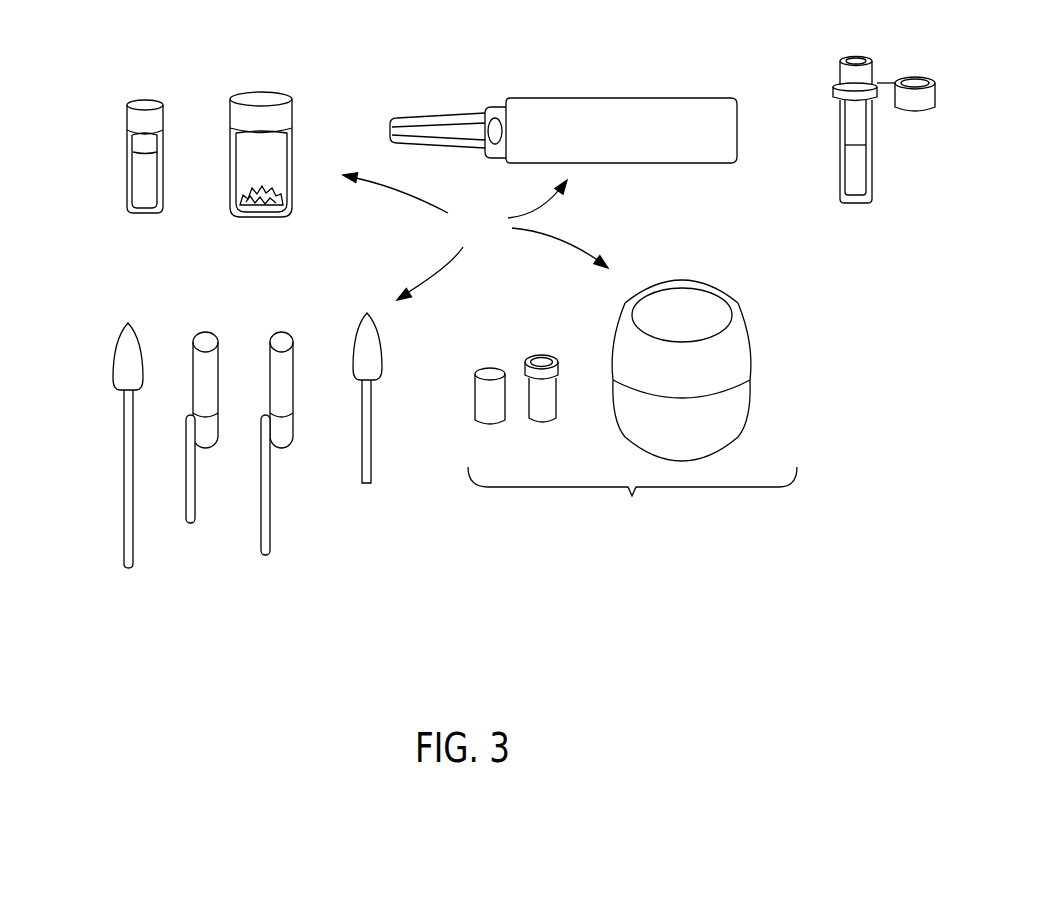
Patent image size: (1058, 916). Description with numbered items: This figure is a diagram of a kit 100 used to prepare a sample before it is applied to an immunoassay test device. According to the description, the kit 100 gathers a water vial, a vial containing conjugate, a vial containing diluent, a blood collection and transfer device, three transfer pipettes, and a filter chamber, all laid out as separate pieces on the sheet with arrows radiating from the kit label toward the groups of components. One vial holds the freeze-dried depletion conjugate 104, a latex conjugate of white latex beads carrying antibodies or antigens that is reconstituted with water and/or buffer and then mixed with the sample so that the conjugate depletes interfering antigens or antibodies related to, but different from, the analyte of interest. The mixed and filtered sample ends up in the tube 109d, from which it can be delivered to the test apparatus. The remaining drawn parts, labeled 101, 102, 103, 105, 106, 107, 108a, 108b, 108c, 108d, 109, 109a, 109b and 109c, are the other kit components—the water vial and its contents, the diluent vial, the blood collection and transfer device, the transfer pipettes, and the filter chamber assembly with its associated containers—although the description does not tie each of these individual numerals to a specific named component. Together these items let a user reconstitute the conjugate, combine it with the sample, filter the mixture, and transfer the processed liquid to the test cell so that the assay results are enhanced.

The kit 100 is at (475, 236).
The vial 101 is at (127, 143).
The liquid in vial 102 is at (147, 177).
The vial 103 is at (293, 146).
The freeze-dried depletion conjugate 104 is at (277, 207).
The tube 105 is at (850, 170).
The cap 106 is at (864, 153).
The tube applicator 107 is at (633, 100).
The swab 108a is at (122, 430).
The swab 108b is at (195, 470).
The swab 108c is at (270, 485).
The swab 108d is at (375, 427).
The container set 109 is at (632, 501).
The small container 109a is at (553, 395).
The jar body 109b is at (725, 415).
The jar lid 109c is at (725, 353).
The tube 109d is at (492, 392).